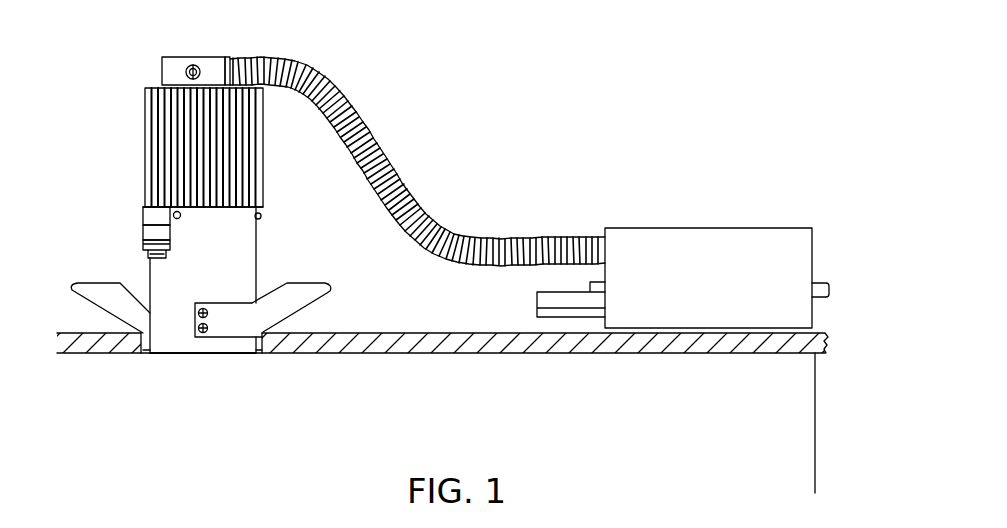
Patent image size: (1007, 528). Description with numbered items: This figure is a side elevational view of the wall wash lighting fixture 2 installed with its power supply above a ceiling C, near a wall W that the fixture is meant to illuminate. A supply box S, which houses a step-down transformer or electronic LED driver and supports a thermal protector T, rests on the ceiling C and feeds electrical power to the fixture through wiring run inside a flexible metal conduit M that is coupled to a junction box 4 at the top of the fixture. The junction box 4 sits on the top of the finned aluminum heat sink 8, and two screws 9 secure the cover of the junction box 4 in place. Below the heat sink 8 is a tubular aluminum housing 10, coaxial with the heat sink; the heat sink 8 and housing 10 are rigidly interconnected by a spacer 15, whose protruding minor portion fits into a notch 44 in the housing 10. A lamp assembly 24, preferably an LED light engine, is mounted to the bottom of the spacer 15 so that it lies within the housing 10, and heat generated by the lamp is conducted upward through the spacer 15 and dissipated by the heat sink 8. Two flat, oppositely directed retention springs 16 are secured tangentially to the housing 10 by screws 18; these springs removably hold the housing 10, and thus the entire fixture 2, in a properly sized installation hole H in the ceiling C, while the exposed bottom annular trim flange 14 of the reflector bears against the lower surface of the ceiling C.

The wall wash lighting fixture 2 is at (114, 108).
The junction box 4 is at (166, 70).
The heat sink 8 is at (148, 158).
The screws 9 is at (196, 65).
The housing 10 is at (247, 236).
The trim flange 14 is at (263, 357).
The spacer 15 is at (146, 213).
The retention springs 16 is at (105, 312).
The screws 18 is at (202, 306).
The lamp assembly 24 is at (145, 233).
The notch 44 is at (145, 252).
The ceiling C is at (393, 350).
The installation hole H is at (147, 357).
The flexible metal conduit M is at (400, 183).
The supply box S is at (706, 237).
The thermal protector T is at (538, 302).
The wall W is at (815, 422).